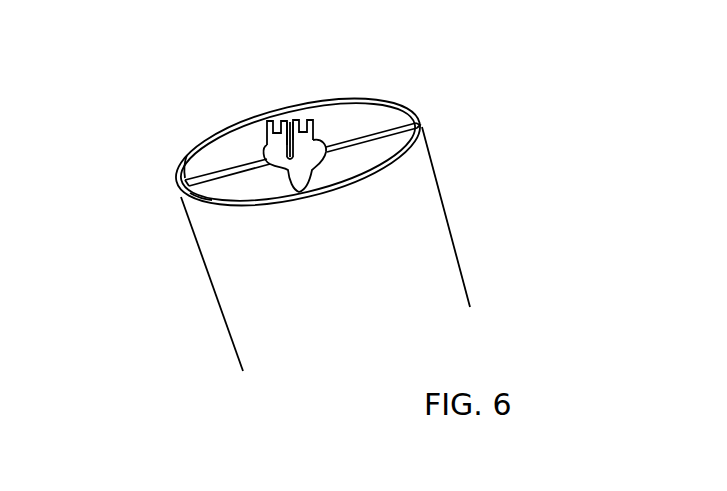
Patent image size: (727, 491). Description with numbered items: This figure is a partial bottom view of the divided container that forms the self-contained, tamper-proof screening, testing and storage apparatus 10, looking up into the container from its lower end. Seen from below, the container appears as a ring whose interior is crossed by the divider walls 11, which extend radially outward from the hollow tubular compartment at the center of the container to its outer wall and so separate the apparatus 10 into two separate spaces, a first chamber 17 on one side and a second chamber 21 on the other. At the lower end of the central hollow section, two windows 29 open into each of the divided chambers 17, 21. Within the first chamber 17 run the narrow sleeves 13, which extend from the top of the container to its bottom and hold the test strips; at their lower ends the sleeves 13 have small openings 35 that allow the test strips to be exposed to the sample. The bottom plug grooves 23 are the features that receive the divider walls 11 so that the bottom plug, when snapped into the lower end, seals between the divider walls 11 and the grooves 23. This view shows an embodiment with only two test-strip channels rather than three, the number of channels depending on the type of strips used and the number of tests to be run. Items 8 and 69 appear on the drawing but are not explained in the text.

The tube 8 is at (443, 287).
The apparatus 10 is at (395, 246).
The divider walls 11 is at (384, 127).
The sleeves 13 is at (320, 113).
The first chamber 17 is at (217, 163).
The second chamber 21 is at (212, 193).
The bottom plug grooves 23 is at (411, 127).
The windows 29 is at (280, 157).
The small openings 35 is at (276, 128).
The cap 69 is at (537, 0).